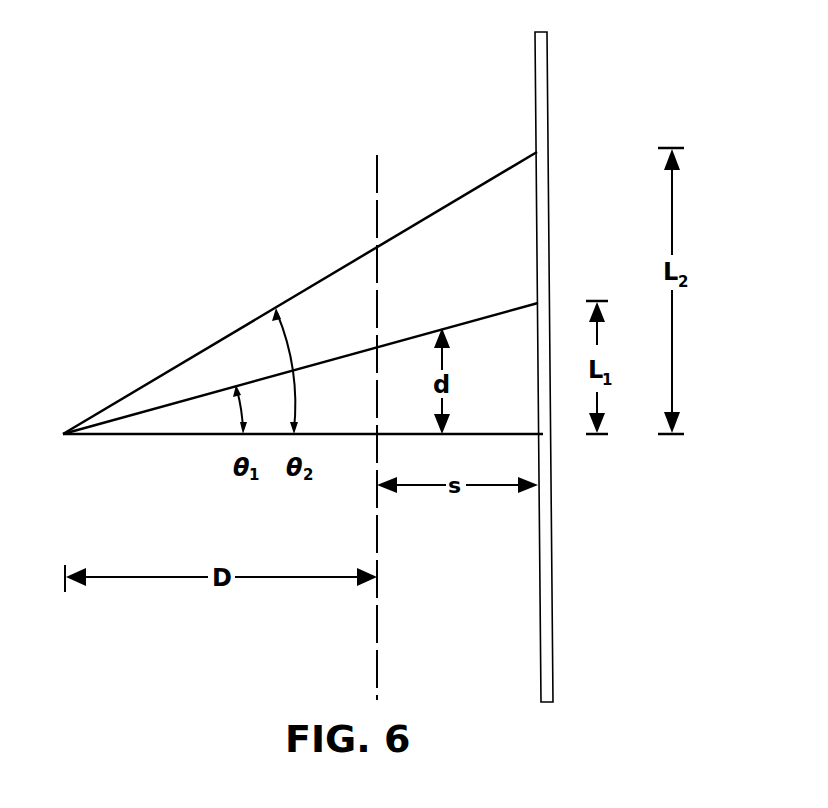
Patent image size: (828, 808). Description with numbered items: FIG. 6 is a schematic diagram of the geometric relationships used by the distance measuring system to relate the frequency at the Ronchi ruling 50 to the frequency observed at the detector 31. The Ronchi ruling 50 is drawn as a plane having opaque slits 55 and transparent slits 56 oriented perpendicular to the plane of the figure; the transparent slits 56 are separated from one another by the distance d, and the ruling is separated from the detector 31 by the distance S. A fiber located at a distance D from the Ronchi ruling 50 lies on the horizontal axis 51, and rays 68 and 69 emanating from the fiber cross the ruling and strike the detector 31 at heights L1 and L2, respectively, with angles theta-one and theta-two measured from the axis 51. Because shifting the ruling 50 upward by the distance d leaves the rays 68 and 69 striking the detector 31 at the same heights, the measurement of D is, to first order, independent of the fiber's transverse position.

The detector 31 is at (546, 67).
The Ronchi ruling 50 is at (377, 176).
The optical axis 51 is at (183, 436).
The opaque slits 55 is at (378, 281).
The transparent slits 56 is at (380, 628).
The ray 68 is at (316, 364).
The ray 69 is at (308, 288).